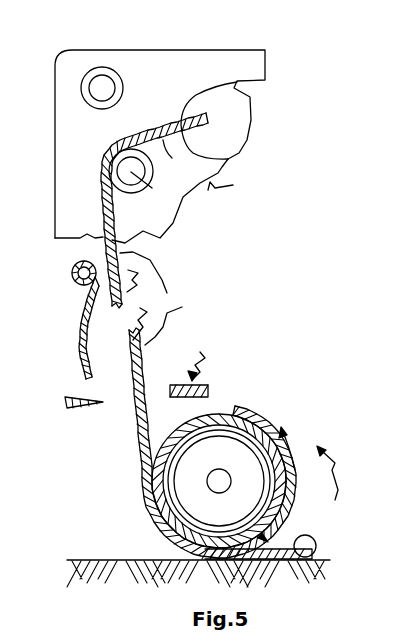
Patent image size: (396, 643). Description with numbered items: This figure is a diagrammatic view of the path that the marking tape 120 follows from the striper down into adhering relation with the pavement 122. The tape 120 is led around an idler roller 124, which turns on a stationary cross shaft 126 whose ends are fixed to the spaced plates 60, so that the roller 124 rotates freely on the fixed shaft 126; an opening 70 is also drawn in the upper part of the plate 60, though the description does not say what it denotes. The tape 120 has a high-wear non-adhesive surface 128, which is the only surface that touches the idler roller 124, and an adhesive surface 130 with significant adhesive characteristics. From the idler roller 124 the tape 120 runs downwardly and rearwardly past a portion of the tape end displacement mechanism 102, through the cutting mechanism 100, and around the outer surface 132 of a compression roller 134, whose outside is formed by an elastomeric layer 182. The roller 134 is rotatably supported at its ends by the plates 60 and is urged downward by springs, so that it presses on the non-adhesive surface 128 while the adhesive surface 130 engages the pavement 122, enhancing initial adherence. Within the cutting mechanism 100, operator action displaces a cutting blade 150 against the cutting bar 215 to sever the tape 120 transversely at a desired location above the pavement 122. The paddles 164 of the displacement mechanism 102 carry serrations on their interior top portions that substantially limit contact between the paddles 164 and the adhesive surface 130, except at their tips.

The spaced plates 60 is at (174, 78).
The mounting hole 70 is at (102, 88).
The cutting mechanism 100 is at (189, 358).
The tape end displacement mechanism 102 is at (78, 307).
The tape 120 is at (233, 185).
The pavement 122 is at (142, 573).
The idler roller 124 is at (152, 178).
The cross shaft 126 is at (152, 188).
The non-adhesive surface 128 is at (218, 173).
The adhesive surface 130 is at (263, 76).
The outer surface of compression roller 132 is at (235, 415).
The compression roller 134 is at (268, 542).
The cutting blade 150 is at (85, 406).
The paddles 164 is at (83, 355).
The elastomeric layer 182 is at (248, 410).
The cutting bar 215 is at (208, 390).